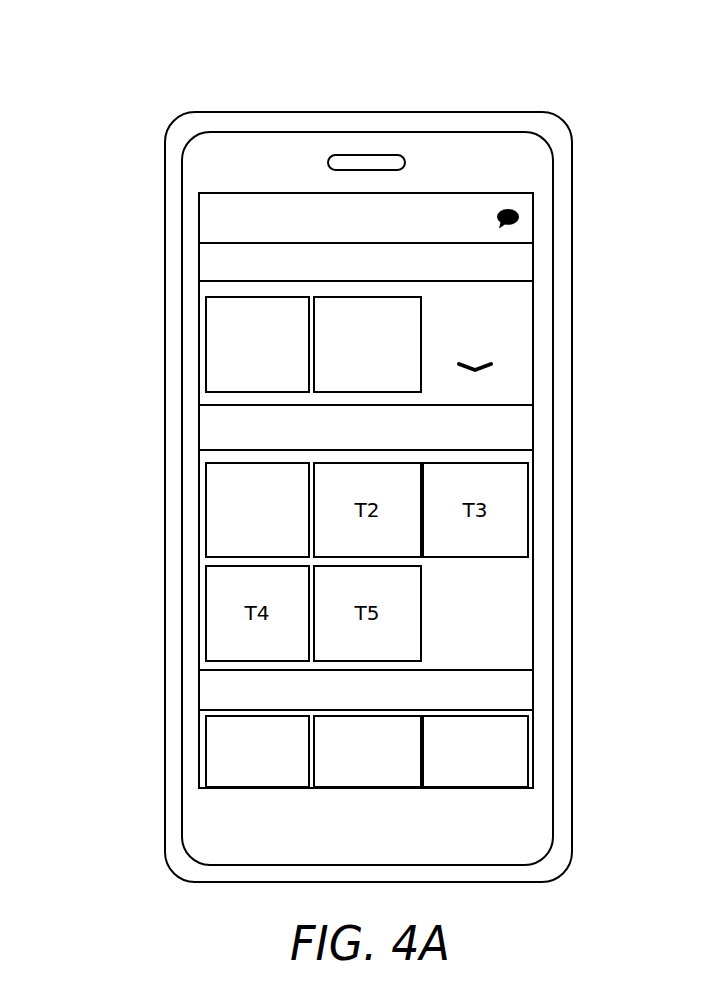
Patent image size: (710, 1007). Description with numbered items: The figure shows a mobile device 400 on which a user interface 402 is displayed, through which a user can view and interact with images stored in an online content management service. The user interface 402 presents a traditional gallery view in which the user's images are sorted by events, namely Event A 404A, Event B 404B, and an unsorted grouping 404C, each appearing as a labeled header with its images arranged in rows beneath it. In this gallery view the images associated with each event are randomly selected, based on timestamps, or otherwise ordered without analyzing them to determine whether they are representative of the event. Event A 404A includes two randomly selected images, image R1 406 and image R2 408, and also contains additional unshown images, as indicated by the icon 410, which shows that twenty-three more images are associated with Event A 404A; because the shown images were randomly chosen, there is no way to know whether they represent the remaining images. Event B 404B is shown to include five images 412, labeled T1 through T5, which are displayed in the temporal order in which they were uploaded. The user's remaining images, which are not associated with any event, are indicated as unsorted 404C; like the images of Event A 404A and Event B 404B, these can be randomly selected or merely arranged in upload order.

The mobile device 400 is at (488, 112).
The user interface 402 is at (199, 205).
The Event A 404A is at (199, 267).
The Event B 404B is at (199, 430).
The unsorted 404C is at (199, 693).
The image R1 406 is at (206, 347).
The image R2 408 is at (421, 323).
The icon 410 is at (497, 350).
The images 412 is at (206, 520).